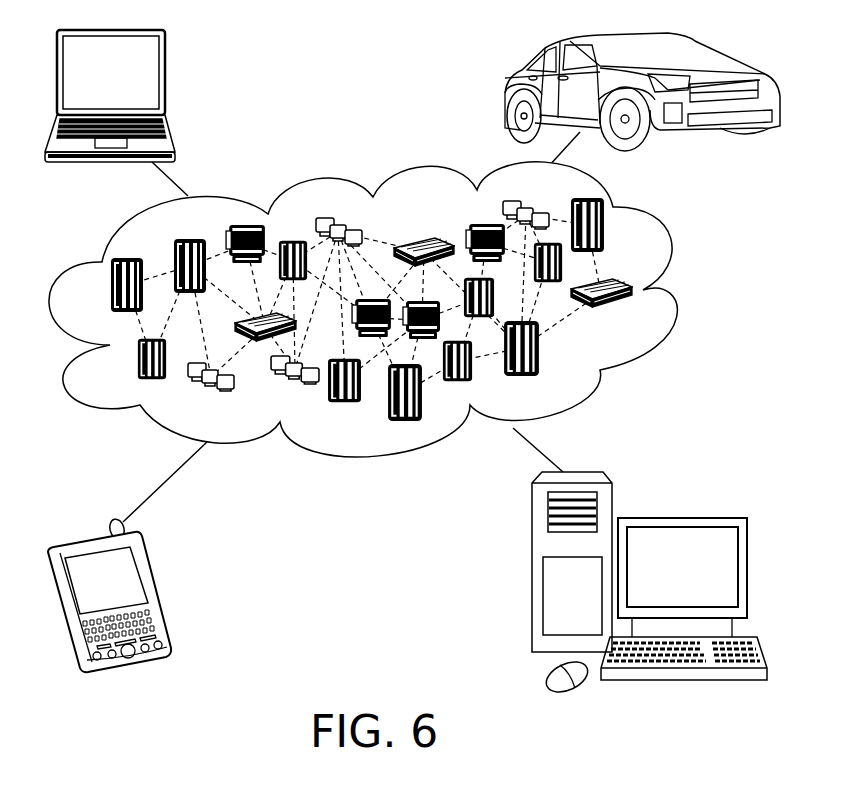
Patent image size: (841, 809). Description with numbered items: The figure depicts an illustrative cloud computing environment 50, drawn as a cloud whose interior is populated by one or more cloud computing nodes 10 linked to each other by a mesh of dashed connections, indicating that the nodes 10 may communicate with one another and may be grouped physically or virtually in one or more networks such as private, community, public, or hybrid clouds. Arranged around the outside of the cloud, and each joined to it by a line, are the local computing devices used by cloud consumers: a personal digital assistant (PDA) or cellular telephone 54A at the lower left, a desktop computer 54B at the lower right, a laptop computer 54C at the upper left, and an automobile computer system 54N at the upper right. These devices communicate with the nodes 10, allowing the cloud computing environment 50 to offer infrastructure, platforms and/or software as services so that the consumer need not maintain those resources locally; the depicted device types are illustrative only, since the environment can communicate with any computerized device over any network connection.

The cloud computing node 10 is at (633, 314).
The cloud computing environment 50 is at (683, 293).
The personal digital assistant (PDA) or cellular telephone 54A is at (158, 592).
The desktop computer 54B is at (680, 515).
The laptop computer 54C is at (165, 78).
The automobile computer system 54N is at (507, 92).